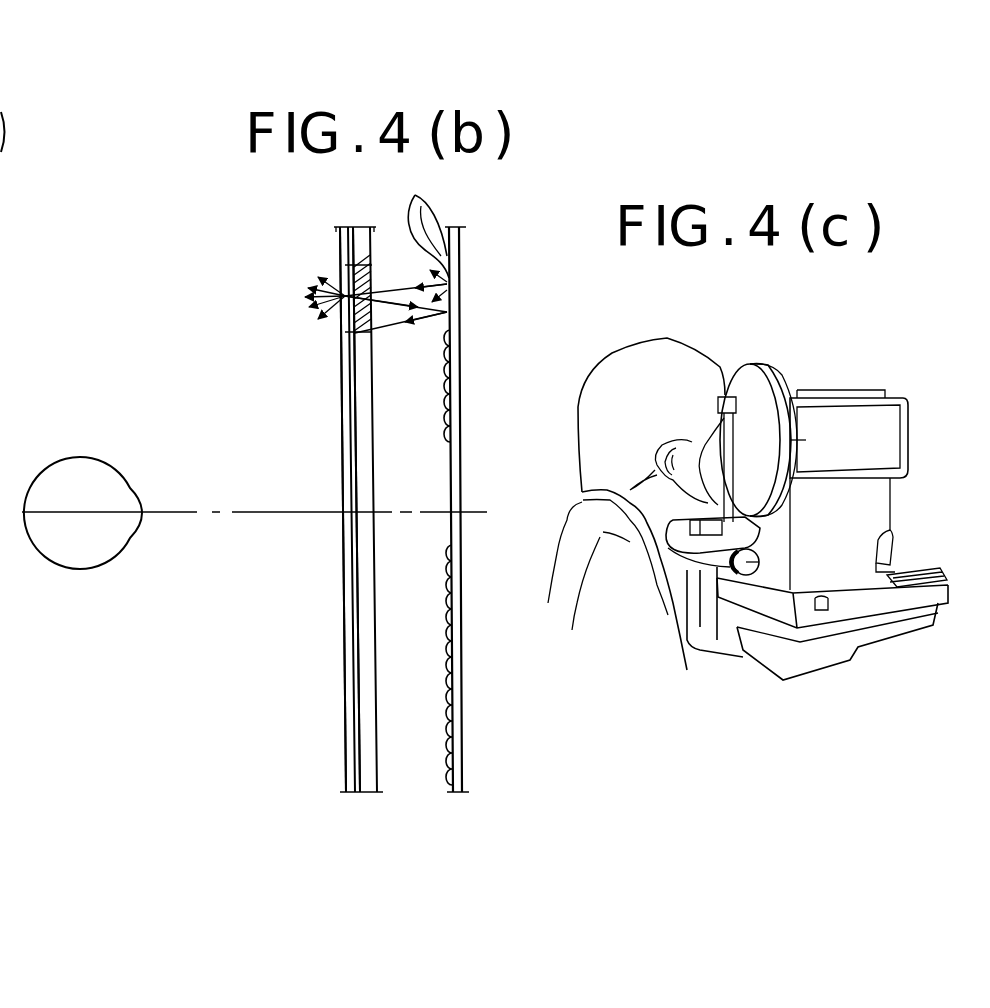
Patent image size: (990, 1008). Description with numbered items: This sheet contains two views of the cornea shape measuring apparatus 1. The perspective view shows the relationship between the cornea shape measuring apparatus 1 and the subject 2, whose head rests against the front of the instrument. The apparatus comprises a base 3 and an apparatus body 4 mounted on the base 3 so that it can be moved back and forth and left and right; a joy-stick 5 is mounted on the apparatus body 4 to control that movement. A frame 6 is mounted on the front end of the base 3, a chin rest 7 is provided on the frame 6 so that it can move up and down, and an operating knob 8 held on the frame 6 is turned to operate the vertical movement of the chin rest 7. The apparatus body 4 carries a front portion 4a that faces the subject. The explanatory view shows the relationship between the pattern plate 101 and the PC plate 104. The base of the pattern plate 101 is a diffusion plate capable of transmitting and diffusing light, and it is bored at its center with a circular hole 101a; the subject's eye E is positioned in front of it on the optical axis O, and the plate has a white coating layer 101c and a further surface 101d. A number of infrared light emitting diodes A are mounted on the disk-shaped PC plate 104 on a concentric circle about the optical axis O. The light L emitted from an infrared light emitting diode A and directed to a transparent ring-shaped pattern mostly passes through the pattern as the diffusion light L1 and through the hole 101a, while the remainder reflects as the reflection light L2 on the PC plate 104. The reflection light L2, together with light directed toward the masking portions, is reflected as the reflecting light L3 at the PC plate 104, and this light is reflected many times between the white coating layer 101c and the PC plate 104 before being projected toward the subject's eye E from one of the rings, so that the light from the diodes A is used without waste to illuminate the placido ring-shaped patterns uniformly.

In FIG. 4C, the cornea shape measuring apparatus 1 is at (822, 326).
In FIG. 4C, the subject 2 is at (592, 371).
In FIG. 4C, the base 3 is at (797, 683).
In FIG. 4C, the apparatus body 4 is at (900, 450).
In FIG. 4C, the front frame of measuring unit 4a is at (765, 370).
In FIG. 4C, the joy-stick 5 is at (893, 537).
In FIG. 4C, the frame 6 is at (757, 537).
In FIG. 4C, the chin rest 7 is at (770, 513).
In FIG. 4C, the operating knob 8 is at (760, 563).
In FIG. 4B, the pattern plate 101 is at (363, 795).
In FIG. 4C, the pattern plate 101 is at (740, 378).
In FIG. 4B, the circular hole 101a is at (340, 535).
In FIG. 4C, the circular hole 101a is at (740, 443).
In FIG. 4B, the white coating layer 101c is at (357, 797).
In FIG. 4B, the plate surface 101d is at (350, 795).
In FIG. 4B, the PC plate 104 is at (465, 805).
In FIG. 4B, the subject's eye E is at (77, 458).
In FIG. 4B, the optical axis O is at (155, 511).
In FIG. 4B, the infrared light emitting diode A is at (428, 219).
In FIG. 4B, the light L is at (398, 290).
In FIG. 4B, the diffusion light L1 is at (307, 270).
In FIG. 4B, the reflection light L2 is at (393, 322).
In FIG. 4B, the reflecting light L3 is at (426, 325).